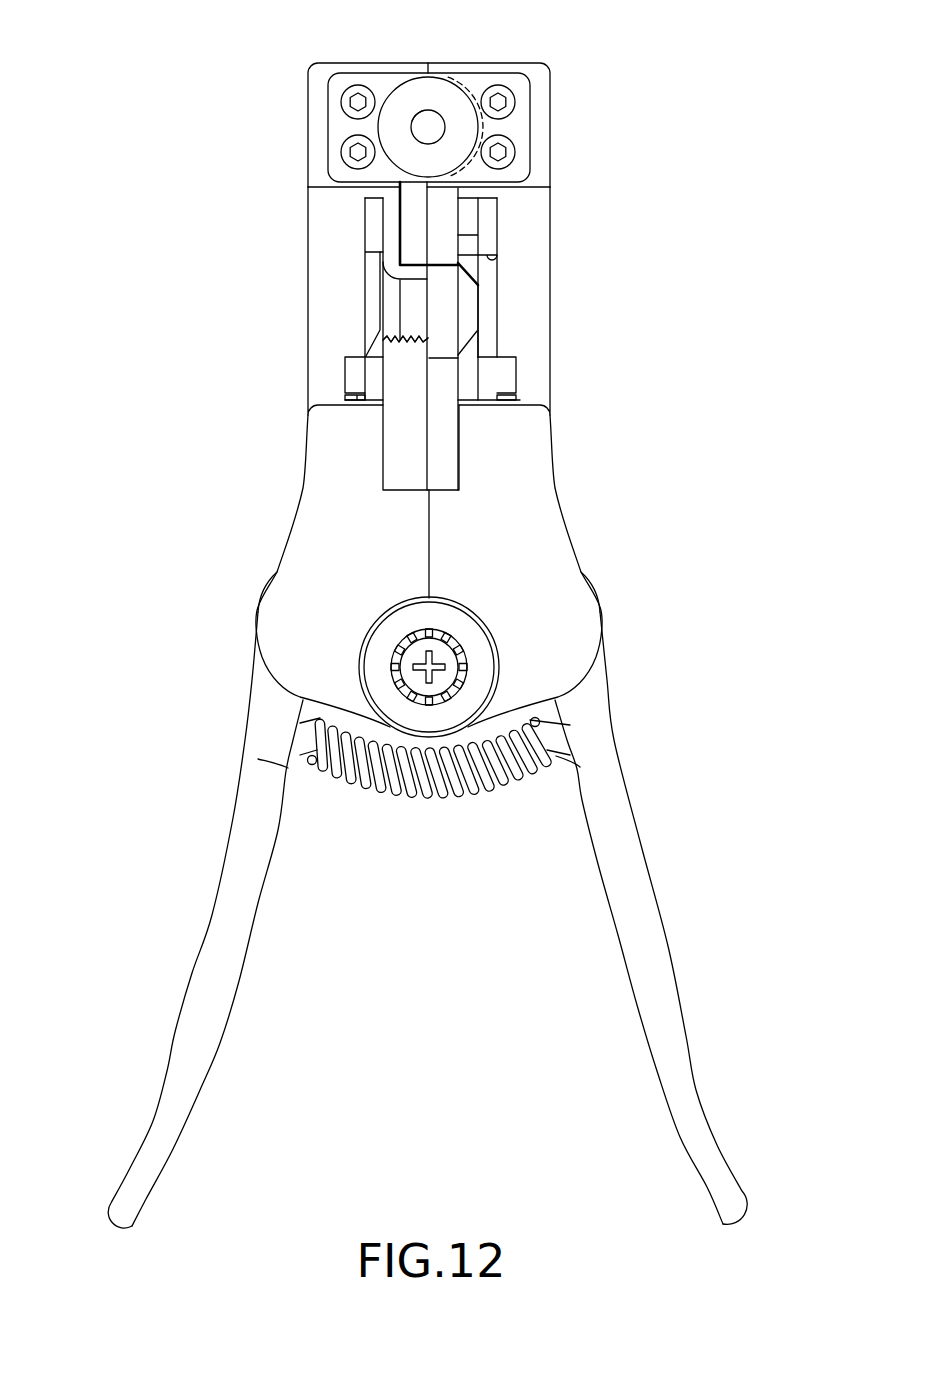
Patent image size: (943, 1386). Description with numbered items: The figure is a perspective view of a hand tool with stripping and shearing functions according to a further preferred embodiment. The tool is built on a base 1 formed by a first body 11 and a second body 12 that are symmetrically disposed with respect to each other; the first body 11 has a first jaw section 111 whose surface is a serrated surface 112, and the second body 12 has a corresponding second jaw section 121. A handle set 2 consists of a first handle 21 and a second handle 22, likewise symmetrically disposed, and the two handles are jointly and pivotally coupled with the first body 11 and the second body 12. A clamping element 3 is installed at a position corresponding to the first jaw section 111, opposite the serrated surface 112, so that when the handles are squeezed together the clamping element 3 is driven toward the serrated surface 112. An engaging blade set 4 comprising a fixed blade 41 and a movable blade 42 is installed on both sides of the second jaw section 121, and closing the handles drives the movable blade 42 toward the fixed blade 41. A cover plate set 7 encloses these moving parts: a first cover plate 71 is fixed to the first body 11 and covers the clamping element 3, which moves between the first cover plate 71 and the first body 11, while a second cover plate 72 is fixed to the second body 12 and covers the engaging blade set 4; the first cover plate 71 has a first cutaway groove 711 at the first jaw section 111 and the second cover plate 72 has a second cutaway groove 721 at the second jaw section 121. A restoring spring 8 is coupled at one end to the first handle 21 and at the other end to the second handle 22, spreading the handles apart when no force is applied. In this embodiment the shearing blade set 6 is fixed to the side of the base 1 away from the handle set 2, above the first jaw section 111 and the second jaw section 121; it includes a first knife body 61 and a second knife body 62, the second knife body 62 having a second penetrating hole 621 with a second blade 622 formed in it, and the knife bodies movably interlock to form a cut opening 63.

The base 1 is at (332, 56).
The handle set 2 is at (432, 920).
The first handle 21 is at (212, 927).
The second handle 22 is at (651, 964).
The clamping element 3 is at (390, 230).
The engaging blade set 4 is at (490, 272).
The fixed blade 41 is at (470, 367).
The movable blade 42 is at (490, 235).
The shearing blade set 6 is at (316, 93).
The first knife body 61 is at (330, 130).
The second knife body 62 is at (520, 125).
The cut opening 63 is at (417, 110).
The second penetrating hole 621 is at (439, 112).
The second blade 622 is at (428, 120).
The cover plate set 7 is at (350, 233).
The first cover plate 71 is at (370, 240).
The first cutaway groove 711 is at (380, 255).
The second cover plate 72 is at (467, 247).
The second cutaway groove 721 is at (500, 258).
The restoring spring 8 is at (430, 800).
The first body 11 is at (408, 214).
The first jaw section 111 is at (383, 357).
The serrated surface 112 is at (297, 384).
The second body 12 is at (440, 205).
The second jaw section 121 is at (443, 358).